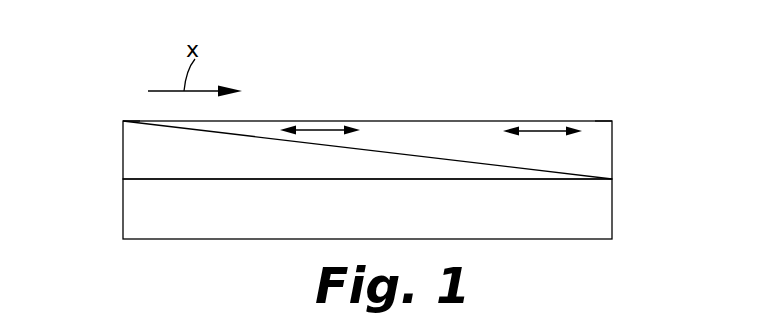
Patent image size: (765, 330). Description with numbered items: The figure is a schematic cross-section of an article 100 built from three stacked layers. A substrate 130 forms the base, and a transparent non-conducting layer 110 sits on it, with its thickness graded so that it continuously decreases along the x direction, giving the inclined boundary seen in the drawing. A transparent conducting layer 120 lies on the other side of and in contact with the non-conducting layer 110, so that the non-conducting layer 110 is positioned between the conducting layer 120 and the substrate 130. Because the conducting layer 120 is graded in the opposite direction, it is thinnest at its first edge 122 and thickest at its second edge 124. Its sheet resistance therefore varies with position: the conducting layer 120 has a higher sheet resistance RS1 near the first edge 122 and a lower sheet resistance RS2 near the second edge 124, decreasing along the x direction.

The article 100 is at (628, 50).
The transparent non-conducting layer 110 is at (143, 162).
The transparent conducting layer 120 is at (596, 154).
The first edge 122 is at (123, 121).
The second edge 124 is at (612, 128).
The substrate 130 is at (145, 216).
The sheet resistance near the first edge RS1 is at (323, 128).
The sheet resistance near the second edge RS2 is at (544, 129).